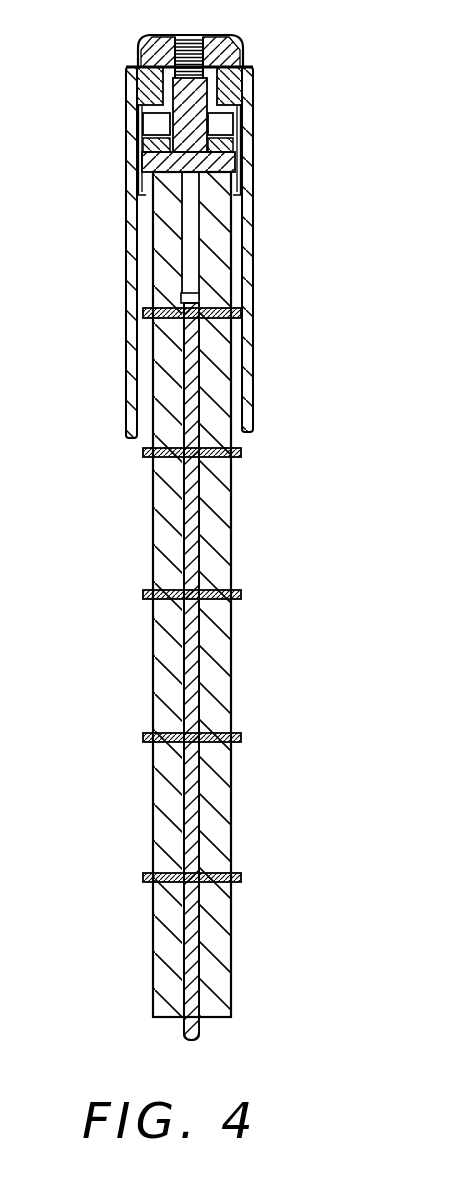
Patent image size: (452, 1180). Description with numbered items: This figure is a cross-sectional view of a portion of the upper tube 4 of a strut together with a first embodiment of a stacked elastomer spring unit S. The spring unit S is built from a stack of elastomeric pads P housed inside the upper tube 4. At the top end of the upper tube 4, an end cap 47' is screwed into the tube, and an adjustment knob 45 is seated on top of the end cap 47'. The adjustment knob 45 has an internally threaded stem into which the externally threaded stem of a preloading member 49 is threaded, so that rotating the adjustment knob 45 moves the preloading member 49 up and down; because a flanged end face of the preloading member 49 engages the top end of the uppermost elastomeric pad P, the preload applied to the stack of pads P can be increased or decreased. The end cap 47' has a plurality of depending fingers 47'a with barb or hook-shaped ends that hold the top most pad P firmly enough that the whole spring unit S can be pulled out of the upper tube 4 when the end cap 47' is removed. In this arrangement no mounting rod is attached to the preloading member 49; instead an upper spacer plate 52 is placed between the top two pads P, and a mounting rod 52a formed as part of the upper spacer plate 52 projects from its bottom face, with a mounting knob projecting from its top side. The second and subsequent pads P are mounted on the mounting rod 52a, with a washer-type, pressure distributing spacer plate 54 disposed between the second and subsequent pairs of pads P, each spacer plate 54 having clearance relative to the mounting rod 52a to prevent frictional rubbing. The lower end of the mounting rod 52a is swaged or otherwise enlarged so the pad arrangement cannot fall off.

The upper tube 4 is at (127, 388).
The adjustment knob 45 is at (235, 46).
The end cap 47' is at (158, 63).
The depending fingers 47'a is at (139, 205).
The preloading member 49 is at (240, 168).
The upper spacer plate 52 is at (240, 313).
The mounting rod 52a is at (186, 1031).
The pressure distributing spacer plate 54 is at (240, 741).
The spring unit S is at (249, 493).
The elastomeric pads P is at (152, 656).